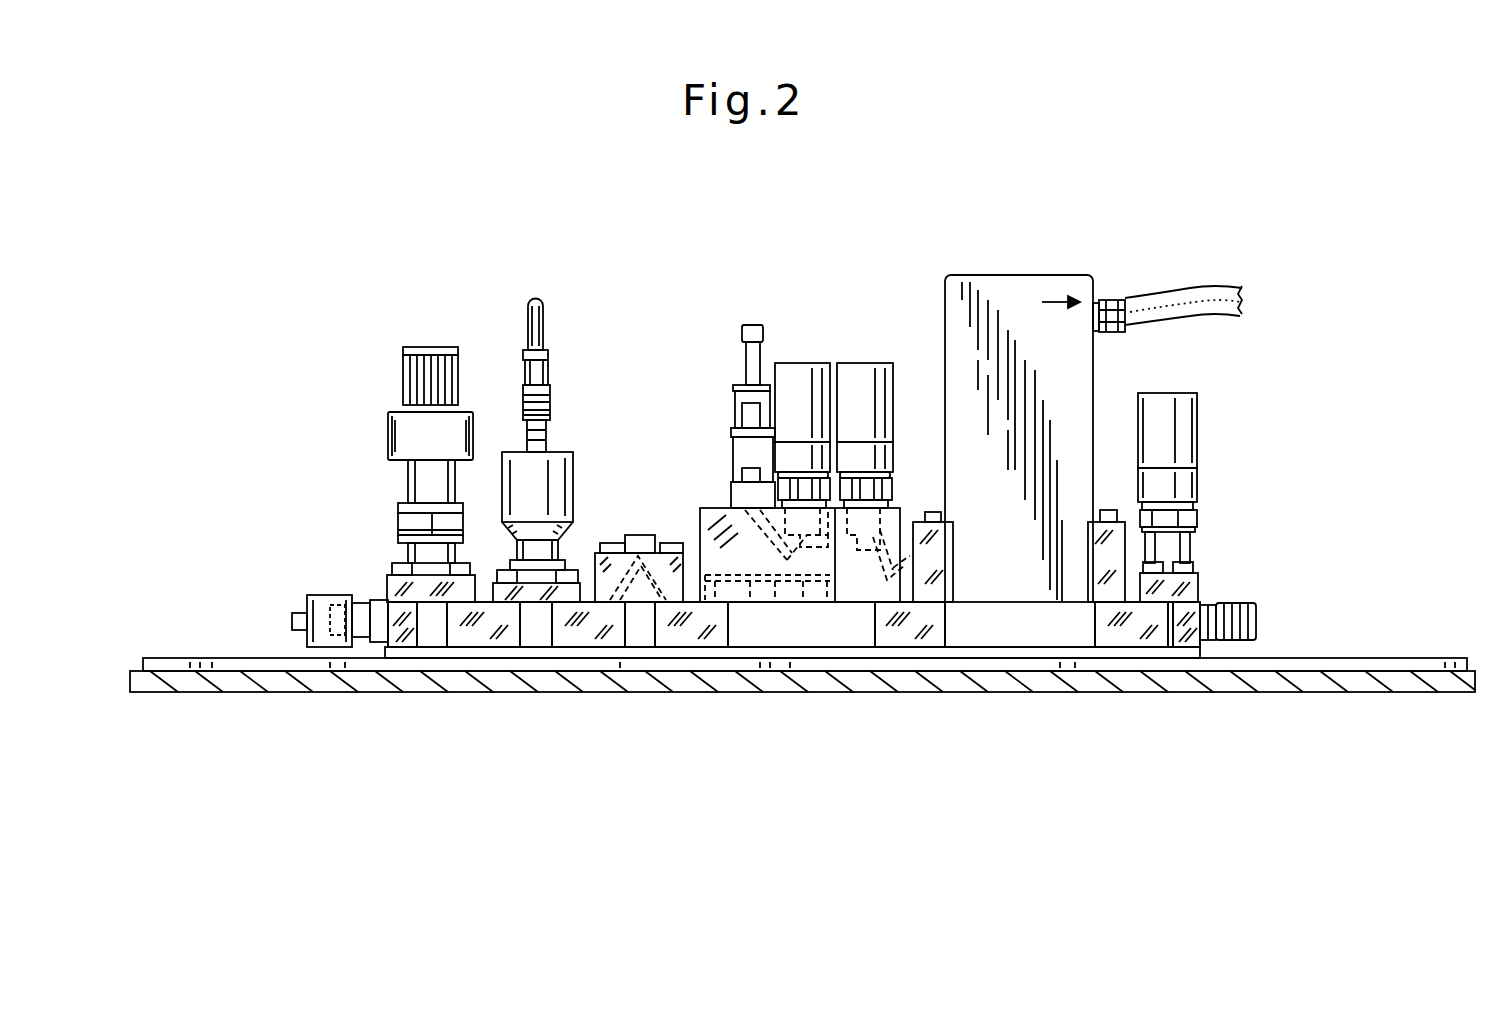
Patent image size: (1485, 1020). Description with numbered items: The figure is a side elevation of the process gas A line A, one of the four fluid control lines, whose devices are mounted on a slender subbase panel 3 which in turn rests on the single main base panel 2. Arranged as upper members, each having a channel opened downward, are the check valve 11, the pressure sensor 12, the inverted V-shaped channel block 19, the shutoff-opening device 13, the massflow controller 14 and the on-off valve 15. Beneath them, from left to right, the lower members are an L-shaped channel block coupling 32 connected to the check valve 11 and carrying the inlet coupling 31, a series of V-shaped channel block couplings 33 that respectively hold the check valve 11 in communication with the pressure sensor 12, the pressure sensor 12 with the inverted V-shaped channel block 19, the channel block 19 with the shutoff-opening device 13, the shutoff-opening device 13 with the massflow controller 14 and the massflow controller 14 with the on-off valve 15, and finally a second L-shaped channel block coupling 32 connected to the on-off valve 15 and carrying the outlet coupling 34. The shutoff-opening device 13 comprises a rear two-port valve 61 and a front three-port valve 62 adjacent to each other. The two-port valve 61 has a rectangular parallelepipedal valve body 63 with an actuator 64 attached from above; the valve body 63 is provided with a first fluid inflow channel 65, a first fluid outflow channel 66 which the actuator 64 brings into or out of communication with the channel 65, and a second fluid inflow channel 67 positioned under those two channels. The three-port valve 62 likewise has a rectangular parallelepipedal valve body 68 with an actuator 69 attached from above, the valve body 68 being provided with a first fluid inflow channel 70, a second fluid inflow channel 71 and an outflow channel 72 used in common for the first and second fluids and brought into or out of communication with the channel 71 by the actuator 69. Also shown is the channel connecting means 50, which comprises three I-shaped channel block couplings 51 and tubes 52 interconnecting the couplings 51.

The main base panel 2 is at (1384, 692).
The subbase panel 3 is at (1430, 658).
The check valve 11 is at (405, 524).
The pressure sensor 12 is at (562, 458).
The shutoff-opening device 13 is at (779, 364).
The massflow controller 14 is at (990, 282).
The on-off valve 15 is at (1192, 485).
The inverted V-shaped channel block 19 is at (636, 540).
The inlet coupling 31 is at (333, 638).
The L-shaped channel block coupling 32 is at (403, 637).
The V-shaped channel block coupling 33 is at (478, 637).
The outlet coupling 34 is at (1238, 602).
The channel connecting means 50 is at (699, 364).
The I-shaped channel block coupling 51 is at (745, 452).
The tube 52 is at (750, 355).
The two-port valve 61 is at (806, 364).
The three-port valve 62 is at (886, 364).
The valve body 63 is at (698, 520).
The actuator 64 is at (790, 364).
The first fluid inflow channel 65 is at (750, 565).
The first fluid outflow channel 66 is at (807, 575).
The second fluid inflow channel 67 is at (775, 580).
The valve body 68 is at (895, 514).
The actuator 69 is at (866, 368).
The first fluid inflow channel 70 is at (868, 577).
The second fluid inflow channel 71 is at (840, 573).
The outflow channel 72 is at (953, 568).
The process gas A line A is at (1214, 429).